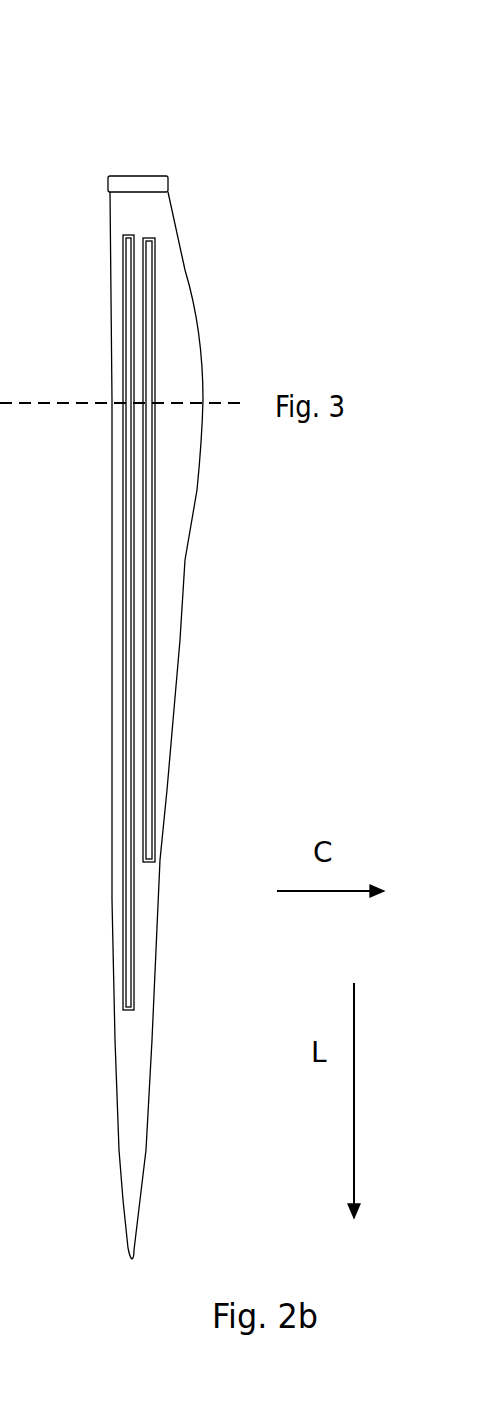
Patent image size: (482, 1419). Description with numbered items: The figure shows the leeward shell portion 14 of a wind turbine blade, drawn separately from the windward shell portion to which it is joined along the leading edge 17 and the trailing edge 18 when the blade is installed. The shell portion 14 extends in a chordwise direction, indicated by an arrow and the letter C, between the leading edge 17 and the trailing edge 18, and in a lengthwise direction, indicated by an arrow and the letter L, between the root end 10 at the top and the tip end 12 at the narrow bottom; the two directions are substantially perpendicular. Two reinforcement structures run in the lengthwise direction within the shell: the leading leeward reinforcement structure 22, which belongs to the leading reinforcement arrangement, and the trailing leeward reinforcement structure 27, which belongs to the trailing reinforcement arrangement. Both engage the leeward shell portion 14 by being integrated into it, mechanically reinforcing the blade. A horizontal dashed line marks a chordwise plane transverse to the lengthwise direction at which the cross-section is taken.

The root end 10 is at (140, 174).
The tip end 12 is at (130, 1262).
The leeward shell portion 14 is at (232, 333).
The leading edge 17 is at (112, 578).
The trailing edge 18 is at (185, 595).
The leading leeward reinforcement structure 22 is at (125, 905).
The trailing leeward reinforcement structure 27 is at (155, 458).